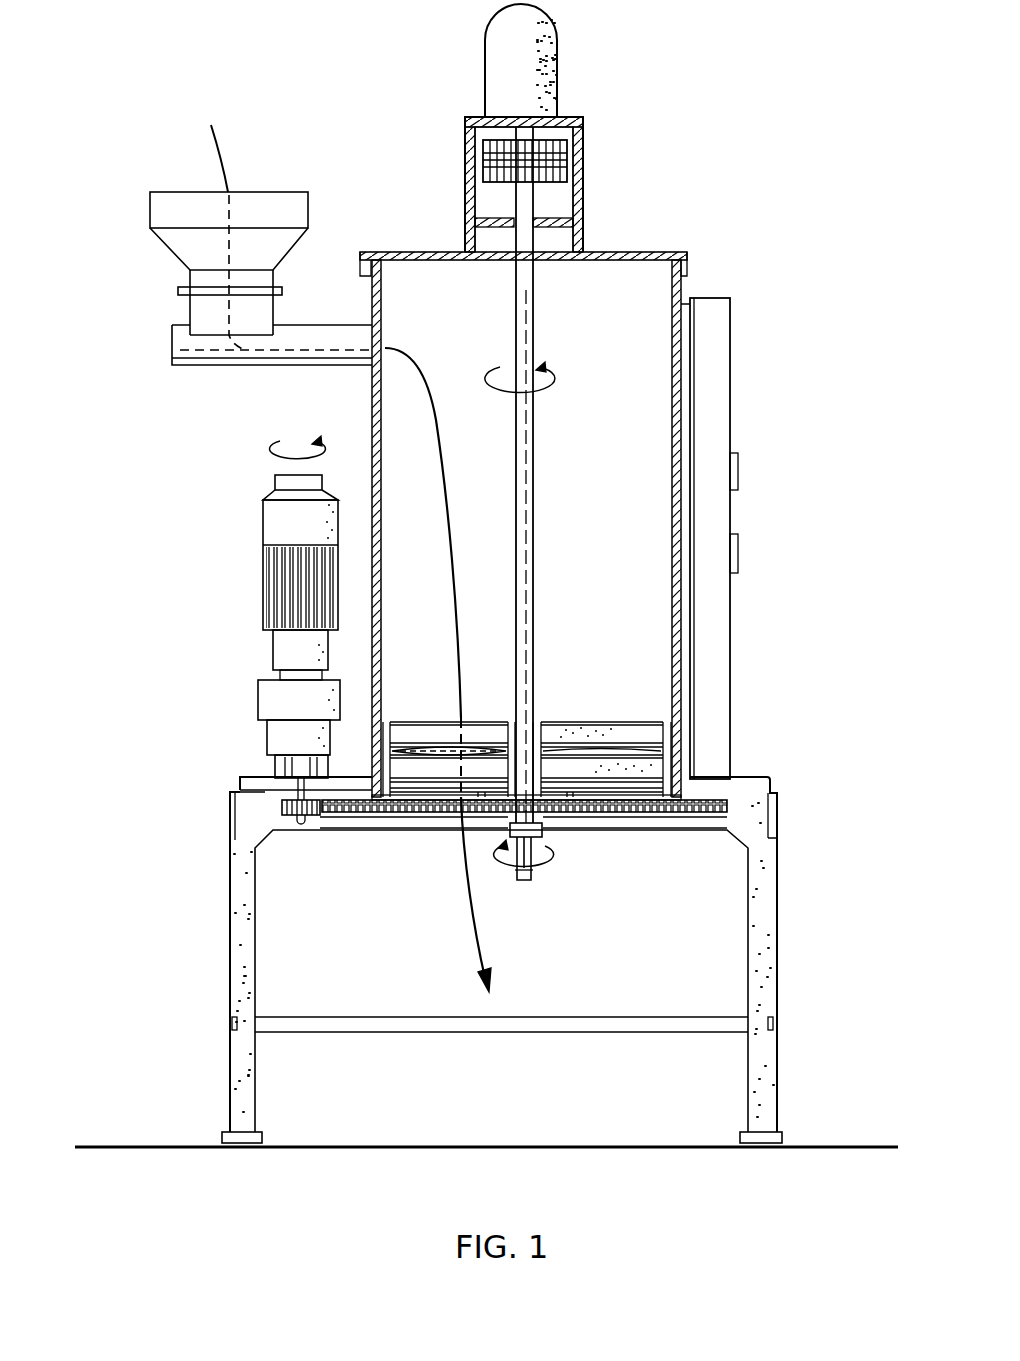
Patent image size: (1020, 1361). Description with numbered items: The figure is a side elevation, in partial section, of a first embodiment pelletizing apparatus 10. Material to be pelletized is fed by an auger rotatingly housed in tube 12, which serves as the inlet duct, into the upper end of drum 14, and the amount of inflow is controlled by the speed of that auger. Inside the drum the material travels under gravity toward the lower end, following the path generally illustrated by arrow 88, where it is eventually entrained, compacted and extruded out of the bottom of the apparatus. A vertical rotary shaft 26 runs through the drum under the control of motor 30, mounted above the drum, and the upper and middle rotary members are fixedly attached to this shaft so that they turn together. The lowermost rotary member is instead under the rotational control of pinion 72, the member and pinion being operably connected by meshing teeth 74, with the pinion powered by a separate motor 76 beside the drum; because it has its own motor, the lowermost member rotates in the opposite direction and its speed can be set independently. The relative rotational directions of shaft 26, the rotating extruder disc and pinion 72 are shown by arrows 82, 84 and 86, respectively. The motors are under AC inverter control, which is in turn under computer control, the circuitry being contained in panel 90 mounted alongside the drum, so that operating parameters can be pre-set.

The pelletizing apparatus 10 is at (325, 132).
The tube 12 is at (227, 355).
The drum 14 is at (626, 251).
The rotary shaft 26 is at (535, 549).
The motor 30 is at (559, 42).
The pinion 72 is at (292, 816).
The meshing teeth 74 is at (428, 810).
The motor 76 is at (285, 520).
The arrow 82 is at (540, 395).
The arrow 84 is at (538, 868).
The arrow 86 is at (274, 446).
The arrow 88 is at (453, 549).
The panel 90 is at (710, 427).